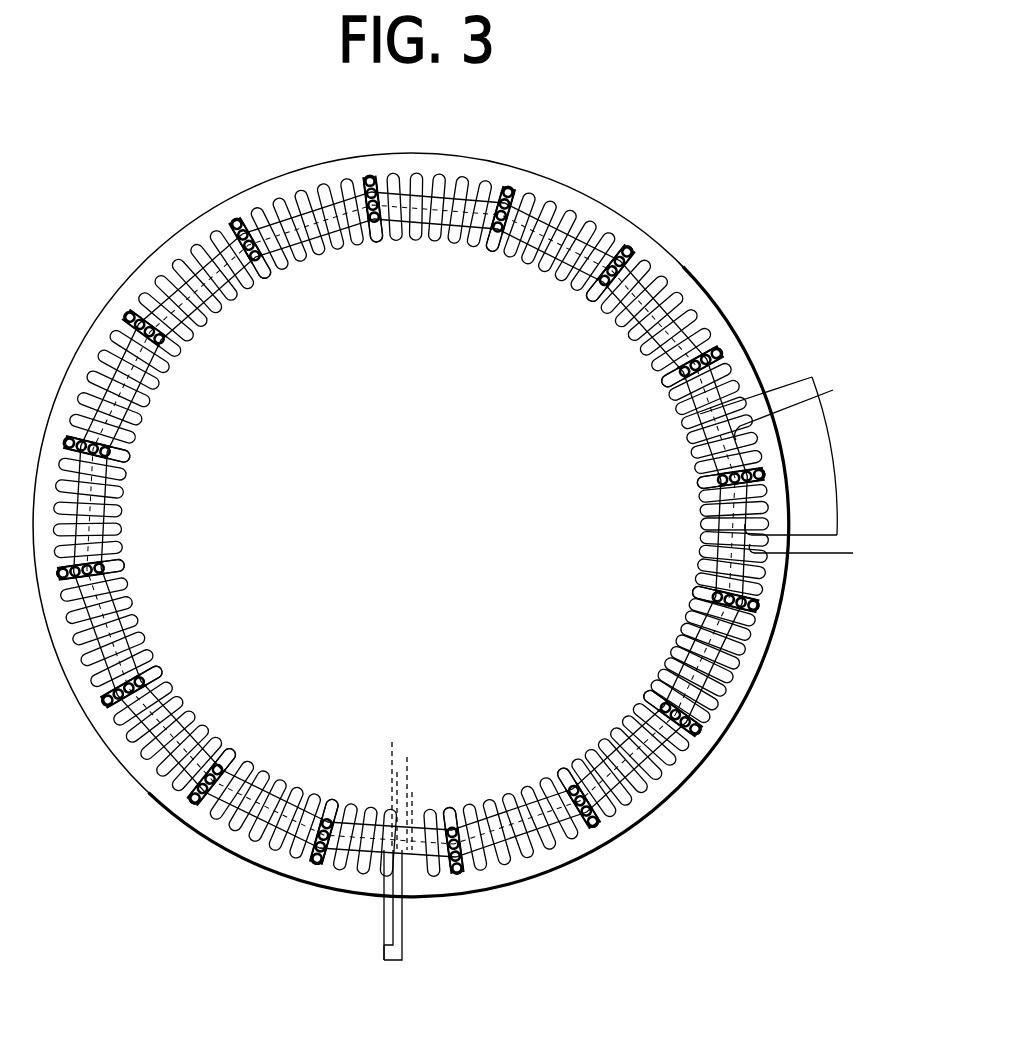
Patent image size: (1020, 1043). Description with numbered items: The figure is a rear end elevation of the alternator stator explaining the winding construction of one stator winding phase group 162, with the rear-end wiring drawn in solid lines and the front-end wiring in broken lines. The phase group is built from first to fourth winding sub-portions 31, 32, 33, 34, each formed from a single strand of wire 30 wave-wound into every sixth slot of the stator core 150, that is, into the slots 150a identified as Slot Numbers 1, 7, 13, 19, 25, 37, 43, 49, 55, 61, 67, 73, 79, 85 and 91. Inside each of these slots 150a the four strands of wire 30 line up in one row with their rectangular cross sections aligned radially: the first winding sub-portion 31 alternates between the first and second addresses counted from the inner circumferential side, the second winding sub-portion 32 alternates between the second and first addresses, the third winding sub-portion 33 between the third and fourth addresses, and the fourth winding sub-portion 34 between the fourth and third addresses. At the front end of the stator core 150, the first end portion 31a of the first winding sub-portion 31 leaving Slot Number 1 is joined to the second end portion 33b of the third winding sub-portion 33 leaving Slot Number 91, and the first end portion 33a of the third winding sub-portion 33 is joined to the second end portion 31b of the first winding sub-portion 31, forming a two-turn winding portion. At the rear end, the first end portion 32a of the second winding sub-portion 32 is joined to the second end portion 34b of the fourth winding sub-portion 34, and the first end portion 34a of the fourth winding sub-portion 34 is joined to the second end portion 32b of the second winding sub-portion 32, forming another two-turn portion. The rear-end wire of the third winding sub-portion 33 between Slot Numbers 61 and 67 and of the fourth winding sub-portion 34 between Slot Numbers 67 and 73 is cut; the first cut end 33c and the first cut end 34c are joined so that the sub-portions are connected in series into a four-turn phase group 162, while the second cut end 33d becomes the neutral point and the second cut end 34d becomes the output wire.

The stator core 150 is at (724, 309).
The slots 150a is at (684, 270).
The stator winding phase group 162 is at (411, 524).
The strand of wire 30 is at (410, 525).
The first winding sub-portion 31 is at (411, 525).
The second winding sub-portion 32 is at (412, 524).
The third winding sub-portion 33 is at (411, 561).
The fourth winding sub-portion 34 is at (411, 525).
The first end portion of the first winding sub-portion 31a is at (393, 742).
The second end portion of the first winding sub-portion 31b is at (413, 757).
The first end portion of the third winding sub-portion 33a is at (395, 772).
The second end portion of the third winding sub-portion 33b is at (405, 792).
The first end portion of the second winding sub-portion 32a is at (384, 933).
The second end portion of the second winding sub-portion 32b is at (402, 918).
The first end portion of the fourth winding sub-portion 34a is at (385, 960).
The second end portion of the fourth winding sub-portion 34b is at (393, 945).
The first cut end of the third winding sub-portion 33c is at (812, 377).
The second cut end of the third winding sub-portion 33d is at (833, 390).
The first cut end of the fourth winding sub-portion 34c is at (837, 535).
The second cut end of the fourth winding sub-portion 34d is at (853, 553).
The Slot Number 1 is at (330, 825).
The Slot Number 7 is at (219, 771).
The Slot Number 13 is at (142, 683).
The Slot Number 19 is at (102, 567).
The Slot Number 25 is at (109, 452).
The Slot Number 37 is at (259, 260).
The Slot Number 43 is at (375, 223).
The Slot Number 49 is at (497, 228).
The Slot Number 55 is at (604, 280).
The Slot Number 61 is at (684, 369).
The Slot Number 67 is at (721, 482).
The Slot Number 73 is at (716, 597).
The Slot Number 79 is at (664, 710).
The Slot Number 85 is at (575, 791).
The Slot Number 91 is at (454, 831).